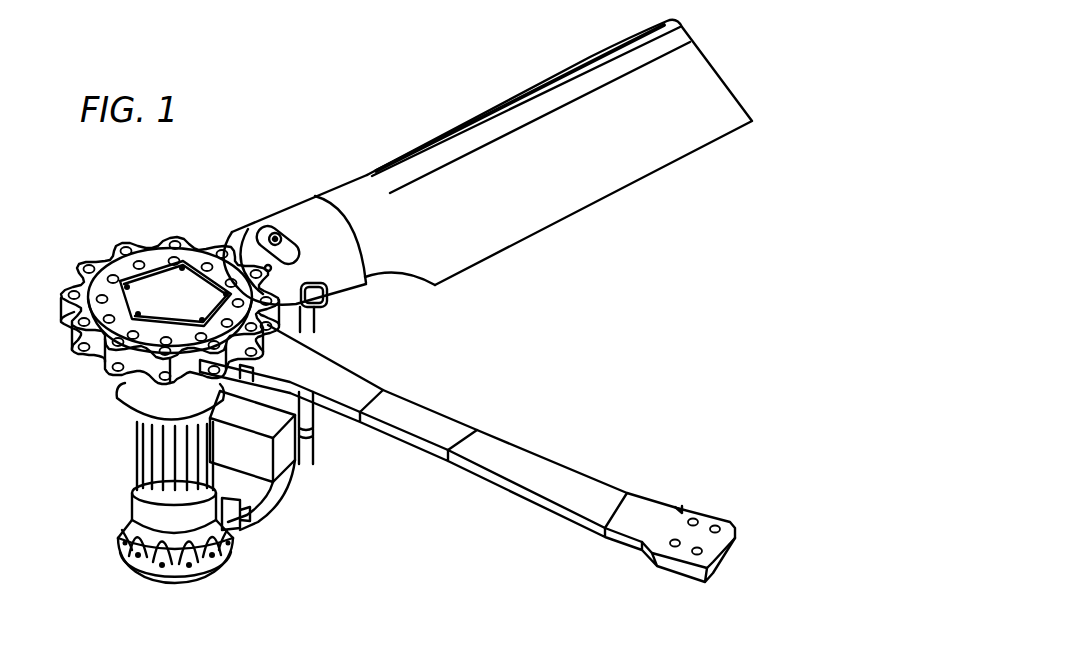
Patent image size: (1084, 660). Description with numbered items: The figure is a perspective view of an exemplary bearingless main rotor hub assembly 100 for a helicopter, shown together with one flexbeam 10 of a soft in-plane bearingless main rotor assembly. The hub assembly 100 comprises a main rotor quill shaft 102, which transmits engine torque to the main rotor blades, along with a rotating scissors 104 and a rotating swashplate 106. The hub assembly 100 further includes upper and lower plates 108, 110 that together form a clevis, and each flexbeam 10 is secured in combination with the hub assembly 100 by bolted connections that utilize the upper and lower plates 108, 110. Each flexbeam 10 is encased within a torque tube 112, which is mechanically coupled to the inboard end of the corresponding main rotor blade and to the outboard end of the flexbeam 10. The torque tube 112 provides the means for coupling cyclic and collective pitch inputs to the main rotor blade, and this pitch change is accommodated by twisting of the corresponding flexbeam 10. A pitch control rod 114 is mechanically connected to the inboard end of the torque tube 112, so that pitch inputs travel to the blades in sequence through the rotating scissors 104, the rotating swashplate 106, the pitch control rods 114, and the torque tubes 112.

The flexbeam 10 is at (578, 454).
The main rotor hub assembly 100 is at (153, 197).
The main rotor quill shaft 102 is at (97, 279).
The rotating scissors 104 is at (300, 470).
The rotating swashplate 106 is at (268, 528).
The upper plate 108 is at (80, 305).
The lower plate 110 is at (100, 358).
The torque tube 112 is at (411, 131).
The pitch control rod 114 is at (344, 331).